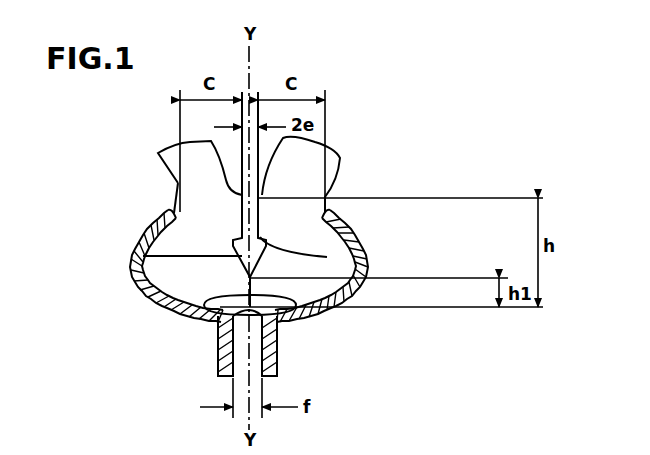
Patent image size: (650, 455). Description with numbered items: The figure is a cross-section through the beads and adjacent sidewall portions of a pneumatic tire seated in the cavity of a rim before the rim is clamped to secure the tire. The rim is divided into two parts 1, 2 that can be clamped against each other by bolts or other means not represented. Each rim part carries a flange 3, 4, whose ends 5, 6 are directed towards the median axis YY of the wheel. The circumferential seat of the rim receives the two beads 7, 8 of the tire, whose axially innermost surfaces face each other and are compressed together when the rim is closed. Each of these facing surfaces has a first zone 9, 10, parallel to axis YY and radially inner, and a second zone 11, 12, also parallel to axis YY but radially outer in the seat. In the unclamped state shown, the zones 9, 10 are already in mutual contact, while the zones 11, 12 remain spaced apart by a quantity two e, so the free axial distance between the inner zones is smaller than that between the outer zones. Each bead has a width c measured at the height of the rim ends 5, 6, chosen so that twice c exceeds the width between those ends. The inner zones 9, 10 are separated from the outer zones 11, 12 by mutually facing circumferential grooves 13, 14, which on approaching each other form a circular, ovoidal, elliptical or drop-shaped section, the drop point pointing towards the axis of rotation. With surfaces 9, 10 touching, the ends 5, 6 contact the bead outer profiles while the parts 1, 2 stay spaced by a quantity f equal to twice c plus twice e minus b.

The rim part 1 is at (217, 352).
The rim part 2 is at (283, 347).
The flange 3 is at (145, 288).
The flange 4 is at (340, 298).
The flange end 5 is at (170, 213).
The flange end 6 is at (332, 216).
The bead 7 is at (208, 224).
The bead 8 is at (296, 215).
The first zone 9 is at (168, 314).
The first zone 10 is at (290, 318).
The second zone 11 is at (178, 183).
The second zone 12 is at (305, 217).
The circumferential groove 13 is at (137, 262).
The circumferential groove 14 is at (366, 253).